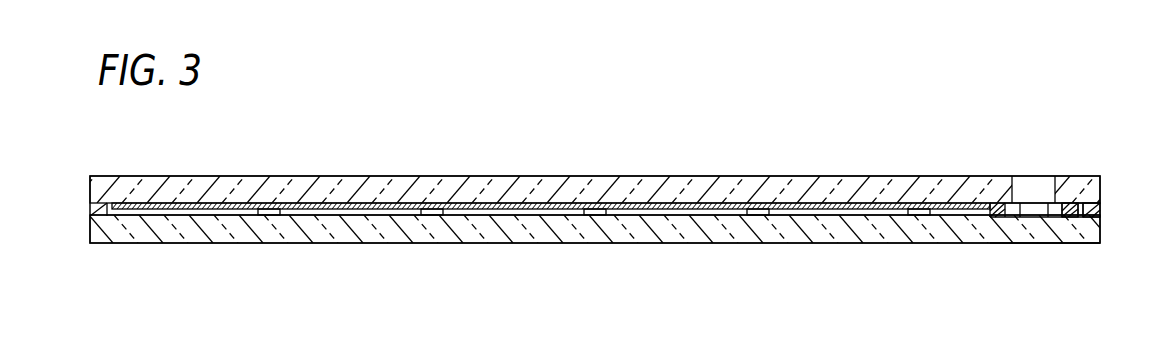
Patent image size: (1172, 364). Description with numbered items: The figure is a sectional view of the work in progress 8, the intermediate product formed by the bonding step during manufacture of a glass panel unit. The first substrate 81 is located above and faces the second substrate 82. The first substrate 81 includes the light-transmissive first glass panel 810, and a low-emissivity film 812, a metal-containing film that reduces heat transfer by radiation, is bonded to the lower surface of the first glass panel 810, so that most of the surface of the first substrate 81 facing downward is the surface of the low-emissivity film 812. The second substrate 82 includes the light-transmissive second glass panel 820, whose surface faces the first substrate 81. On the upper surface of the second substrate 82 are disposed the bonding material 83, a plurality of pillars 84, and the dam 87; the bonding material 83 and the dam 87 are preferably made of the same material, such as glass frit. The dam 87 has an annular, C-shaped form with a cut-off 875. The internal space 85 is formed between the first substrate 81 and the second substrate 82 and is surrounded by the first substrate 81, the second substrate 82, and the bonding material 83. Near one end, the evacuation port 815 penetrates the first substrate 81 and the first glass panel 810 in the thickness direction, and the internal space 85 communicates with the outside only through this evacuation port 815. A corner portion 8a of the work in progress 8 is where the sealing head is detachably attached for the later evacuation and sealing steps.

The work in progress 8 is at (921, 176).
The corner portion 8a is at (1017, 243).
The first substrate 81 is at (135, 178).
The first glass panel 810 is at (631, 185).
The low-emissivity film 812 is at (532, 205).
The evacuation port 815 is at (1018, 178).
The second substrate 82 is at (163, 232).
The second glass panel 820 is at (628, 222).
The bonding material 83 is at (1099, 210).
The pillars 84 is at (270, 215).
The internal space 85 is at (815, 215).
The dam 87 is at (1068, 217).
The cut-off 875 is at (1033, 210).